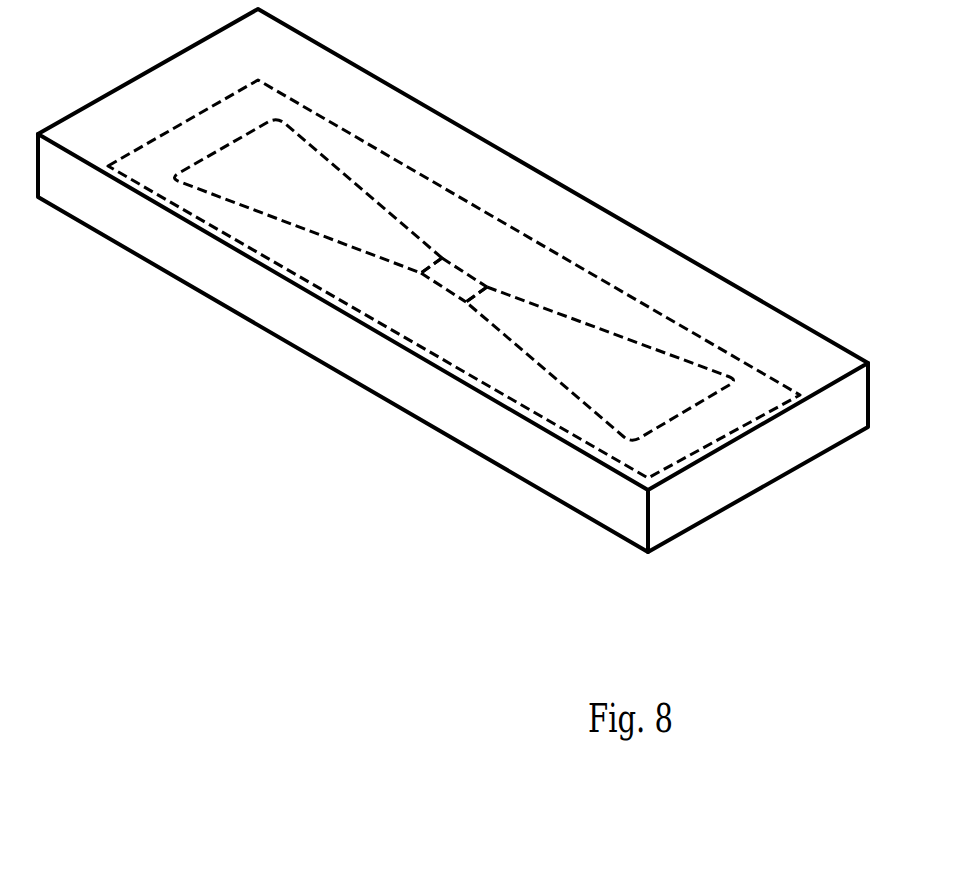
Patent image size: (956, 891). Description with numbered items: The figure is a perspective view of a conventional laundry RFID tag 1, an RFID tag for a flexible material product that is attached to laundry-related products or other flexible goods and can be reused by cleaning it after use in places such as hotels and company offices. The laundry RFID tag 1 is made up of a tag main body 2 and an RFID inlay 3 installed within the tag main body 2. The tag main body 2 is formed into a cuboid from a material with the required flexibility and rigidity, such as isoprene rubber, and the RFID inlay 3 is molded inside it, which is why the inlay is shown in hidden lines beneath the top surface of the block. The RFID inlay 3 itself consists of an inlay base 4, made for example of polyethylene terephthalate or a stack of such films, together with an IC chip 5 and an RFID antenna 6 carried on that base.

The laundry RFID tag 1 is at (630, 181).
The tag main body 2 is at (787, 473).
The RFID inlay 3 is at (468, 545).
The inlay base 4 is at (440, 353).
The IC chip 5 is at (441, 268).
The RFID antenna 6 is at (303, 202).